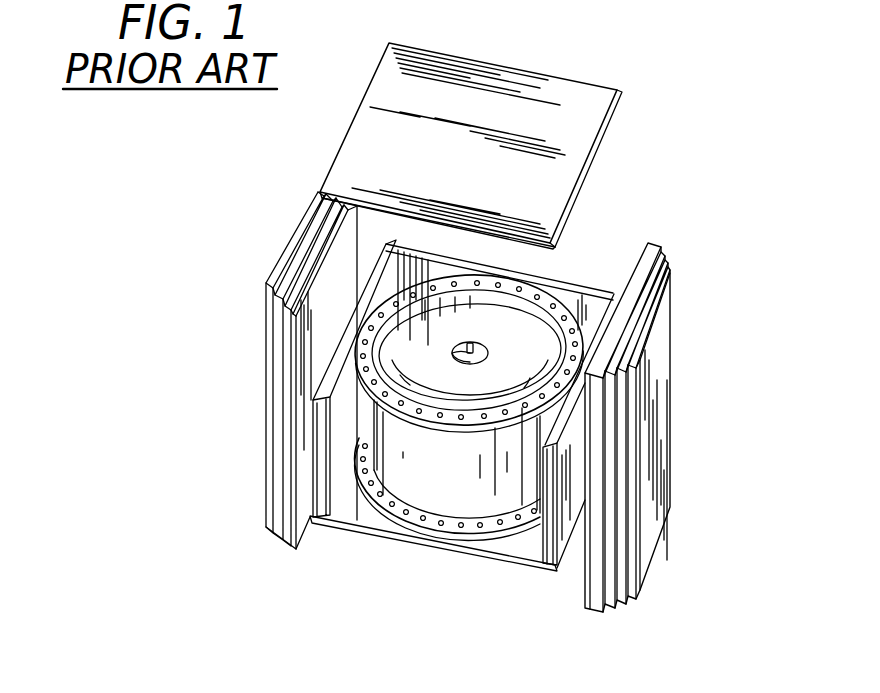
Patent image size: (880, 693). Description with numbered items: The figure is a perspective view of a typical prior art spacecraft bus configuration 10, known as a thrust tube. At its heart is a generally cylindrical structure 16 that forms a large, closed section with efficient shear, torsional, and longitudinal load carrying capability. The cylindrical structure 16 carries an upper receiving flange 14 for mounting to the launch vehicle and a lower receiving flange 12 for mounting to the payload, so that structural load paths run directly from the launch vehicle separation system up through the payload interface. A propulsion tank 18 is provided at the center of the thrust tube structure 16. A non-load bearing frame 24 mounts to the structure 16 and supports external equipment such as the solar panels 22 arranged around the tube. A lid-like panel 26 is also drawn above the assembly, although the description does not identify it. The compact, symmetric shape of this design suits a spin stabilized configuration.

The prior art bus configuration 10 is at (717, 254).
The lower receiving flange 12 is at (477, 379).
The upper receiving flange 14 is at (558, 308).
The cylindrical structure 16 is at (472, 497).
The propulsion tank 18 is at (503, 335).
The solar panels 22 is at (266, 388).
The non-load bearing frame 24 is at (583, 502).
The lid 26 is at (593, 91).